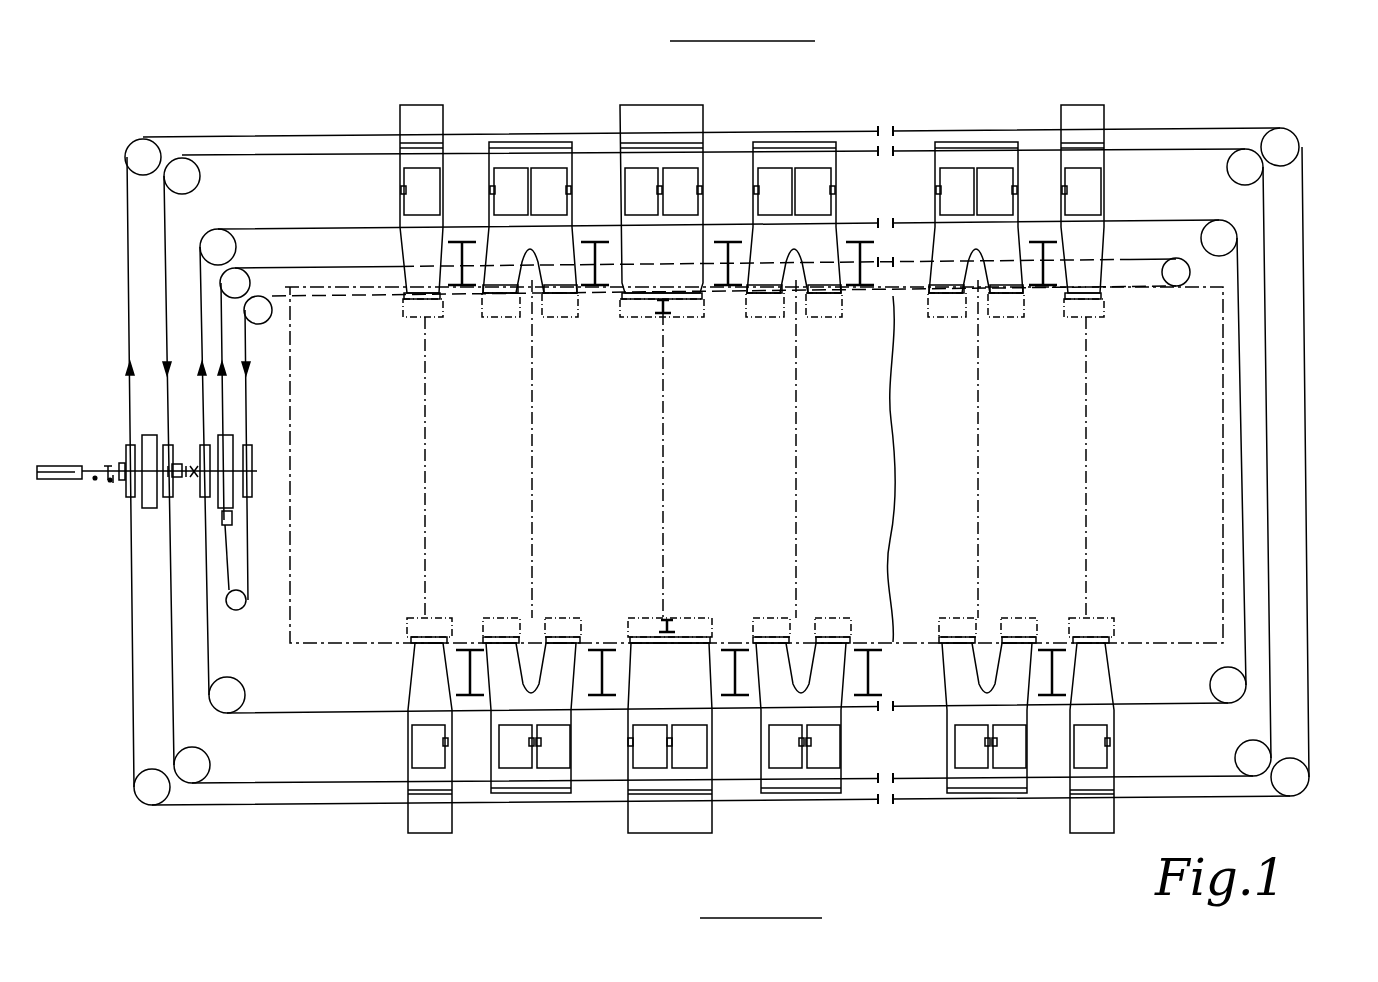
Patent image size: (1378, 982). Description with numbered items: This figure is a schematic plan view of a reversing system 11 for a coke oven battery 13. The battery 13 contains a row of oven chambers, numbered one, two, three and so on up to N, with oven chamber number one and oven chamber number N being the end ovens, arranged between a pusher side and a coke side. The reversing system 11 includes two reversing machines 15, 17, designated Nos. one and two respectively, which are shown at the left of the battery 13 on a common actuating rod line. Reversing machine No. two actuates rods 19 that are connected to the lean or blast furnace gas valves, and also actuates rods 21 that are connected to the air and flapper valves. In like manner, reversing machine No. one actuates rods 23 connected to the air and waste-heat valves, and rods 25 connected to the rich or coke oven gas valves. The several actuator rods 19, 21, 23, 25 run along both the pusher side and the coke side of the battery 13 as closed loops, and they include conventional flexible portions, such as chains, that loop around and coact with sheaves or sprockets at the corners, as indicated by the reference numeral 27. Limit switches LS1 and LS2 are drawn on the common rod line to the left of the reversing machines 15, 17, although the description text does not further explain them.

The reversing system 11 is at (240, 813).
The coke oven battery 13 is at (340, 652).
The reversing machine No. 1 15 is at (150, 434).
The reversing machine No. 2 17 is at (227, 436).
The rods connected to lean or blast furnace gas valves 19 is at (128, 360).
The rods connected to air and flapper valves 21 is at (165, 322).
The rods connected to air and waste-heat valves 23 is at (200, 284).
The rods connected to rich or coke oven gas valves 25 is at (250, 355).
The sheaves or sprockets 27 is at (188, 182).
The limit switch 1 LS1 is at (94, 482).
The limit switch 2 LS2 is at (110, 483).